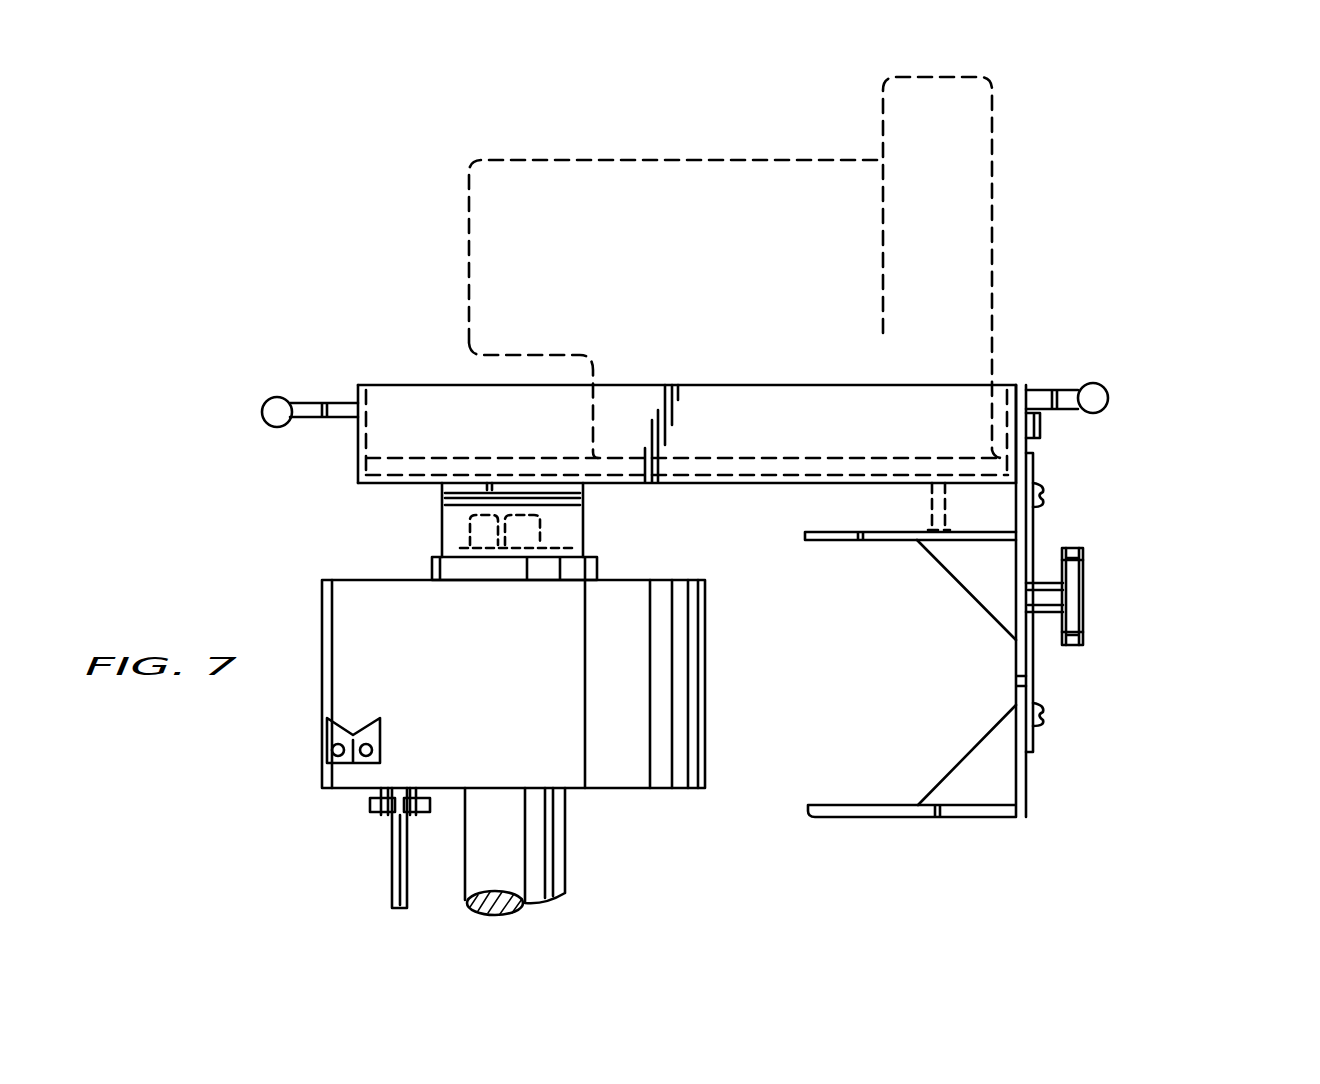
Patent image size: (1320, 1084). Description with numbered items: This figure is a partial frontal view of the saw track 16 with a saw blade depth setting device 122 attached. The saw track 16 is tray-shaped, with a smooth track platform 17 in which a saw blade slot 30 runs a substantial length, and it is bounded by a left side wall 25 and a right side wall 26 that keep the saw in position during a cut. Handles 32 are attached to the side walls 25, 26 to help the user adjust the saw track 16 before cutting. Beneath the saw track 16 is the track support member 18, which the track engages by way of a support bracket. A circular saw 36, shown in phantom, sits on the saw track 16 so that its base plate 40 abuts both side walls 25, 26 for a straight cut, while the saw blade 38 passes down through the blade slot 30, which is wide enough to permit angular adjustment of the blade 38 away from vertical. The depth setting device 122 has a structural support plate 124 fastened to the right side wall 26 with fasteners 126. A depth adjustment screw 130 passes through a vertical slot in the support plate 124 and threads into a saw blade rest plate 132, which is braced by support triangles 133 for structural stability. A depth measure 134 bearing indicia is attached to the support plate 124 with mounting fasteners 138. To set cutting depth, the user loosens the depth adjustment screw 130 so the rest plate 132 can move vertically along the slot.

The saw track 16 is at (657, 450).
The track platform 17 is at (386, 478).
The track support member 18 is at (632, 814).
The left side wall 25 is at (360, 385).
The right side wall 26 is at (1010, 385).
The saw blade slot 30 is at (835, 470).
The handles 32 is at (296, 400).
The circular saw 36 is at (703, 160).
The saw blade 38 is at (930, 500).
The base plate 40 is at (415, 458).
The saw blade depth setting device 122 is at (1044, 601).
The structural support plate 124 is at (1030, 784).
The fasteners 126 is at (1041, 435).
The depth adjustment screw 130 is at (1085, 597).
The saw blade rest plate 132 is at (835, 542).
The support triangles 133 is at (965, 587).
The depth measure 134 is at (1035, 678).
The mounting fasteners 138 is at (1046, 498).